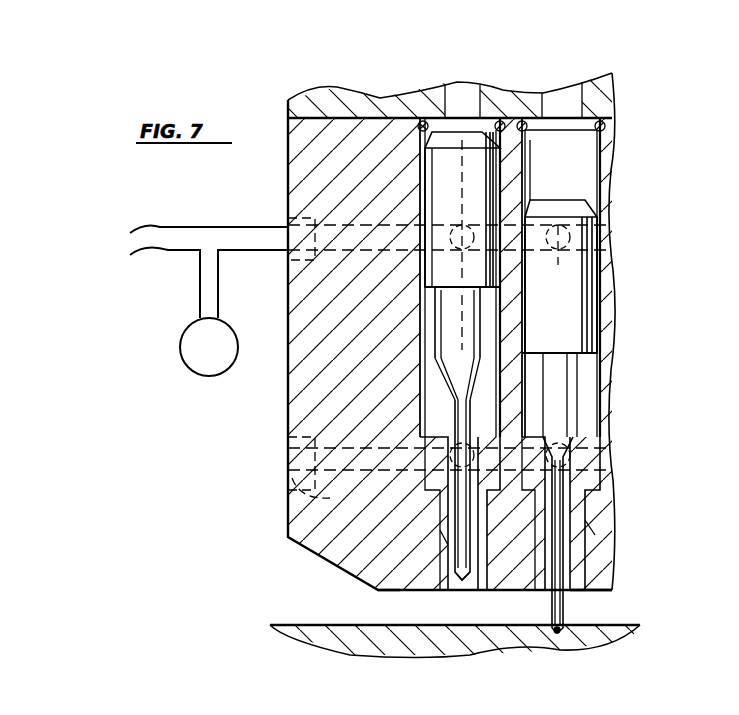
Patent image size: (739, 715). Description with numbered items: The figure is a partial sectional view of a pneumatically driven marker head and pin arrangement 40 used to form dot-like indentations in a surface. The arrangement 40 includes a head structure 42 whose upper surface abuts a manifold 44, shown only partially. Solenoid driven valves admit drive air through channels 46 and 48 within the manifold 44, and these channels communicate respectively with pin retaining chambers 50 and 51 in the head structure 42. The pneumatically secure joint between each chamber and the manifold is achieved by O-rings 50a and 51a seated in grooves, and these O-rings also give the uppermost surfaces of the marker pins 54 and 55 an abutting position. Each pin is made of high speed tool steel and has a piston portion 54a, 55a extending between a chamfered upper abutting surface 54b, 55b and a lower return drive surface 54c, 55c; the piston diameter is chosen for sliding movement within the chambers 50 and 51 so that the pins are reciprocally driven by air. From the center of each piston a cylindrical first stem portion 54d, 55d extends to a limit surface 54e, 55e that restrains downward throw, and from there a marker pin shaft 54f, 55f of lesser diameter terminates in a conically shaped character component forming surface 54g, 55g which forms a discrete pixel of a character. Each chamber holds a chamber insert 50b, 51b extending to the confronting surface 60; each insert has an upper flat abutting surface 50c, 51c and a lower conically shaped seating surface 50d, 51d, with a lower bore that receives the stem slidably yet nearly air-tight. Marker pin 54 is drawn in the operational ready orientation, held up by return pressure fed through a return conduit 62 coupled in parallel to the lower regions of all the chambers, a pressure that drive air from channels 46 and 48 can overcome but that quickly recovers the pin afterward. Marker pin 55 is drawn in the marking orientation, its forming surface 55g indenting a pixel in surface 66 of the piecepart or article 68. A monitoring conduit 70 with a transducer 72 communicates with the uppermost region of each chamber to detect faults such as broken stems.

The marker head arrangement 40 is at (657, 125).
The head structure 42 is at (278, 181).
The manifold 44 is at (300, 102).
The drive air channel 46 is at (465, 100).
The drive air channel 48 is at (562, 100).
The pin retaining chamber 50 is at (426, 333).
The O-ring 50a is at (423, 120).
The chamber insert 50b is at (447, 588).
The upper flat abutting surface 50c is at (428, 433).
The conically shaped seating surface 50d is at (448, 540).
The pin retaining chamber 51 is at (598, 167).
The O-ring 51a is at (522, 120).
The chamber insert 51b is at (592, 590).
The upper flat abutting surface 51c is at (585, 440).
The conically shaped seating surface 51d is at (590, 532).
The marker pin 54 is at (450, 217).
The piston portion 54a is at (440, 168).
The chamfered upper abutting surface 54b is at (486, 132).
The lower return drive surface 54c is at (432, 283).
The first stem portion 54d is at (455, 312).
The limit surface 54e is at (440, 362).
The marker pin shaft 54f is at (456, 398).
The character component forming surface 54g is at (458, 575).
The marker pin 55 is at (573, 294).
The piston portion 55a is at (535, 235).
The chamfered upper abutting surface 55b is at (560, 215).
The lower return drive surface 55c is at (575, 350).
The first stem portion 55d is at (563, 372).
The limit surface 55e is at (545, 425).
The marker pin shaft 55f is at (563, 614).
The character component forming surface 55g is at (558, 635).
The confronting surface 60 is at (392, 592).
The return conduit 62 is at (292, 500).
The surface of article 66 is at (630, 626).
The piecepart or article 68 is at (372, 650).
The monitoring conduit 70 is at (165, 252).
The transducer 72 is at (195, 360).